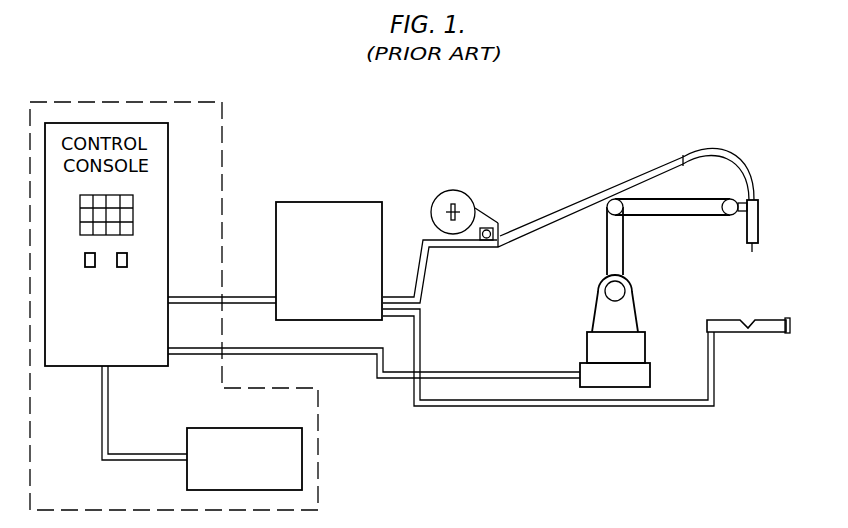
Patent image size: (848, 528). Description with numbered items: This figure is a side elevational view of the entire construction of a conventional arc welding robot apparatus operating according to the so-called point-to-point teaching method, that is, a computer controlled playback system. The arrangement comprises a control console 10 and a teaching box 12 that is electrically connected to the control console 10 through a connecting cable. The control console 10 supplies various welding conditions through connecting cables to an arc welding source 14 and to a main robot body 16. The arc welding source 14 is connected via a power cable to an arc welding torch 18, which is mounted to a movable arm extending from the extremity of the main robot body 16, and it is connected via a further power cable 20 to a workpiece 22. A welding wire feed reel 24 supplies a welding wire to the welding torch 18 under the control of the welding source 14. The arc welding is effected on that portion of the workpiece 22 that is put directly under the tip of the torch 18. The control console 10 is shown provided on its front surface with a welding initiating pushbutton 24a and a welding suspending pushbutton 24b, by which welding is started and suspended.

The control console 10 is at (172, 104).
The teaching box 12 is at (302, 462).
The arc welding source 14 is at (338, 202).
The main robot body 16 is at (635, 303).
The arc welding torch 18 is at (758, 228).
The power cable 20 is at (625, 407).
The workpiece 22 is at (768, 320).
The welding wire feed reel 24 is at (463, 197).
The welding initiating pushbutton 24a is at (88, 268).
The welding suspending pushbutton 24b is at (122, 268).